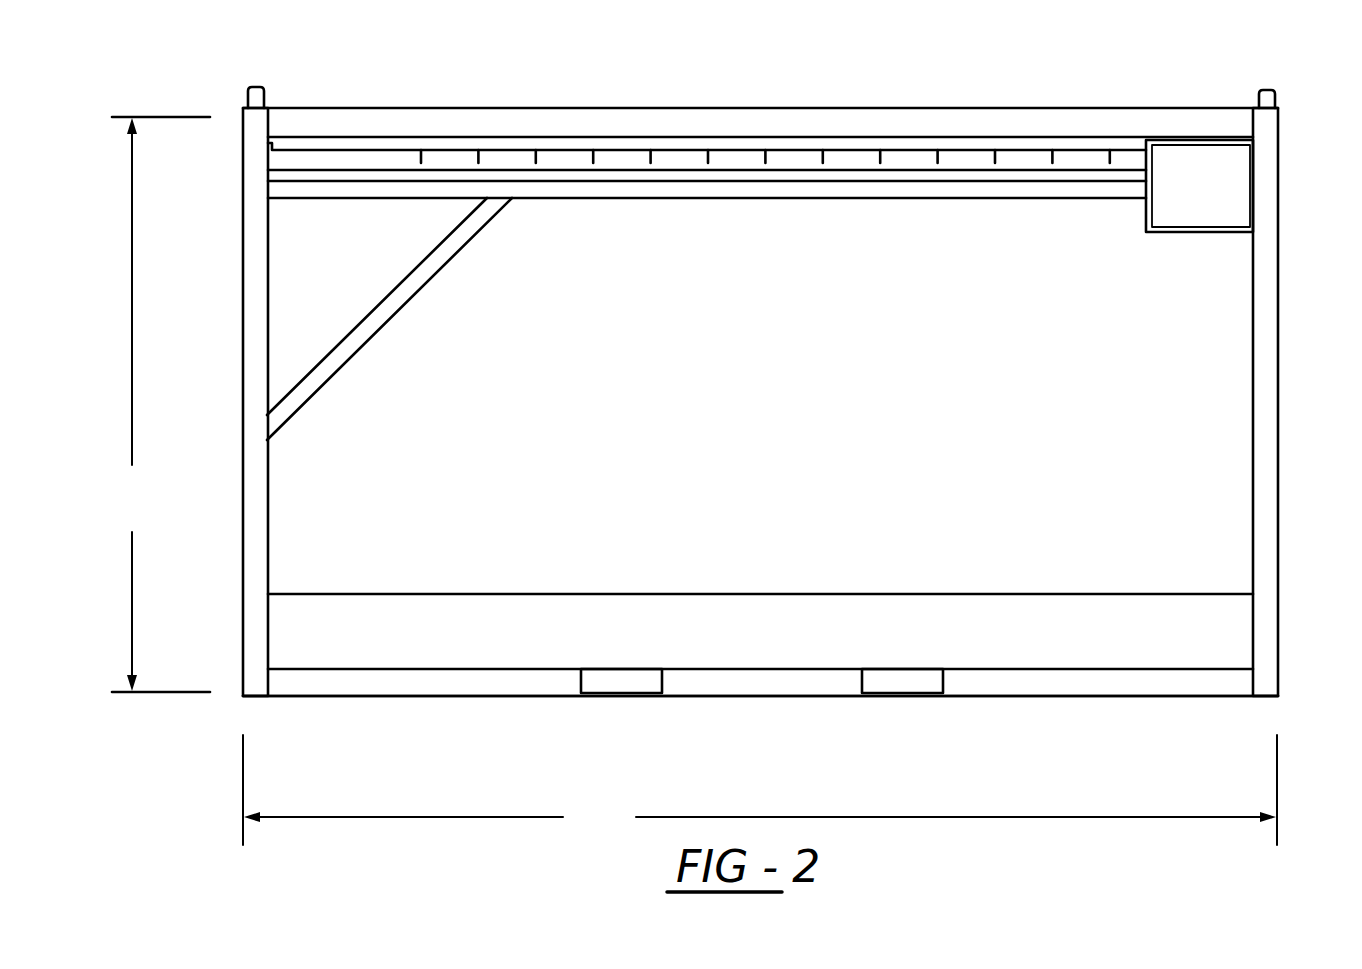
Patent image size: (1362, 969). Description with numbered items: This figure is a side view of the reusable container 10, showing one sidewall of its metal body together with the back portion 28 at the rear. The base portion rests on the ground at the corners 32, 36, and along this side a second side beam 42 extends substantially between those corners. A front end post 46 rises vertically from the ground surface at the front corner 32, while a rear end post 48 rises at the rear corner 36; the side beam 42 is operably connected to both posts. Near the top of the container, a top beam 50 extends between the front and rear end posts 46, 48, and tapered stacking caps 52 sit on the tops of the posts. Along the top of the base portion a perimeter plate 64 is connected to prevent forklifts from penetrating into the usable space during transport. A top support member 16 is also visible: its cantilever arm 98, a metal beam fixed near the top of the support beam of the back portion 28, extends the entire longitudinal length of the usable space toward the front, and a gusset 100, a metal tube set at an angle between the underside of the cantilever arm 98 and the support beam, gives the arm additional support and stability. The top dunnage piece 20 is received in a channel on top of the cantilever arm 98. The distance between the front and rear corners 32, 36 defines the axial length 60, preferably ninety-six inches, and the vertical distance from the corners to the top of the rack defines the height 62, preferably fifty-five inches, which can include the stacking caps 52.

The reusable container 10 is at (870, 78).
The top support member 16 is at (800, 210).
The top dunnage piece 20 is at (912, 160).
The back portion 28 is at (205, 380).
The corner 32 is at (1277, 697).
The corner 36 is at (208, 790).
The second side beam 42 is at (737, 687).
The front end post 46 is at (1278, 280).
The rear end post 48 is at (255, 519).
The top beam 50 is at (488, 128).
The tapered stacking cap 52 is at (1276, 102).
The axial length 60 is at (760, 790).
The height 62 is at (161, 404).
The perimeter plate 64 is at (440, 630).
The cantilever arm 98 is at (648, 199).
The gusset 100 is at (398, 305).